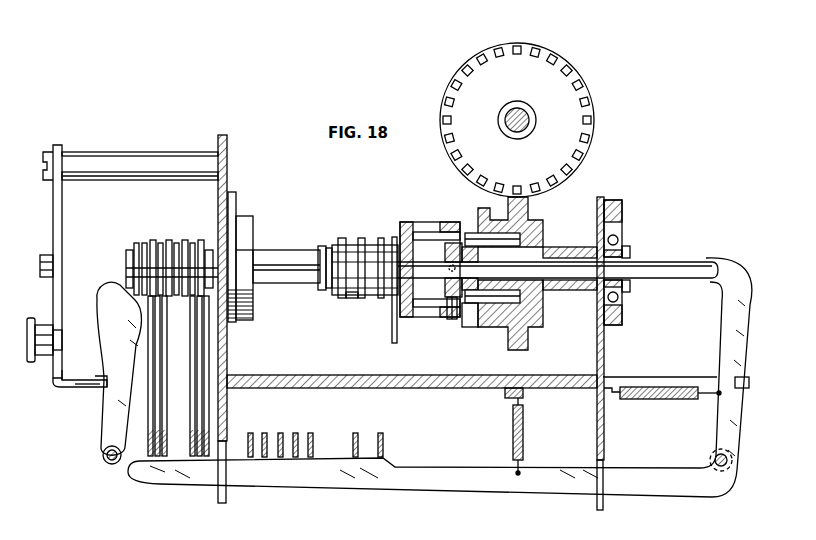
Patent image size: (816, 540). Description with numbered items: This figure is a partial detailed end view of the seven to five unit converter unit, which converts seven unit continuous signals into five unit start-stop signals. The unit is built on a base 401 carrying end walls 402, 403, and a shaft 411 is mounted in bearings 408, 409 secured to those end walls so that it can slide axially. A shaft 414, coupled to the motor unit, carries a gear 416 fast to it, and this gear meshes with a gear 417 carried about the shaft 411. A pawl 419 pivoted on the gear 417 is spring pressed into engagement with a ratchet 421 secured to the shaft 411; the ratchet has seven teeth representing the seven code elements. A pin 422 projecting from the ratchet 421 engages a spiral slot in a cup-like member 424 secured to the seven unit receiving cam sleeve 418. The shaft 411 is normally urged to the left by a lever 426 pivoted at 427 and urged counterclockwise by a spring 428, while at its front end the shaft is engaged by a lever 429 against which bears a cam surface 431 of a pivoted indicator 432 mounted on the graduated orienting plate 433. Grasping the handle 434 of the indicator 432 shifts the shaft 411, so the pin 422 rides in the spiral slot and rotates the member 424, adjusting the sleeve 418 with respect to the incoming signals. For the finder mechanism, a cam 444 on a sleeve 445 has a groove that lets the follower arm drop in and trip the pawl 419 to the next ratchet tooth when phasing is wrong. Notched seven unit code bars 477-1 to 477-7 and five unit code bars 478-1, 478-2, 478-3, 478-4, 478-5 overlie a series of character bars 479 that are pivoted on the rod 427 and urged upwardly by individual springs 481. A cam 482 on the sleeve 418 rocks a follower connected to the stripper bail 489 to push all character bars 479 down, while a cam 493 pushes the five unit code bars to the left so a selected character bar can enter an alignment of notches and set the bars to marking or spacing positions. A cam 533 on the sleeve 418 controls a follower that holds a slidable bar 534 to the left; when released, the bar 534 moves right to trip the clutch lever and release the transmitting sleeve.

The base 401 is at (302, 376).
The end wall 402 is at (227, 160).
The end wall 403 is at (605, 200).
The bearing 408 is at (618, 214).
The bearing 409 is at (243, 220).
The shaft 411 is at (647, 270).
The shaft 414 is at (528, 116).
The gear 416 is at (575, 115).
The gear 417 is at (540, 232).
The seven unit receiving cam sleeve 418 is at (288, 250).
The pawl 419 is at (470, 327).
The ratchet 421 is at (467, 232).
The pin 422 is at (450, 316).
The member 424 is at (400, 228).
The lever 426 is at (730, 370).
The pivot 427 is at (730, 460).
The spring 428 is at (637, 387).
The lever 429 is at (108, 406).
The cam surface 431 is at (106, 380).
The pivoted indicator 432 is at (68, 292).
The orienting plate 433 is at (57, 212).
The handle 434 is at (30, 358).
The cam 444 is at (394, 238).
The sleeve 445 is at (352, 299).
The seven unit code bar 477-1 is at (205, 446).
The seven unit code bar 477-7 is at (148, 447).
The five unit code bar 478-1 is at (250, 432).
The five unit code bar 478-2 is at (265, 432).
The five unit code bar 478-3 is at (280, 458).
The five unit code bar 478-4 is at (296, 458).
The five unit code bar 478-5 is at (312, 432).
The character bar 479 is at (472, 485).
The spring 481 is at (512, 431).
The cam 482 is at (382, 240).
The stripper bail 489 is at (381, 458).
The cam 493 is at (342, 298).
The cam 533 is at (362, 298).
The slidable bar 534 is at (356, 458).